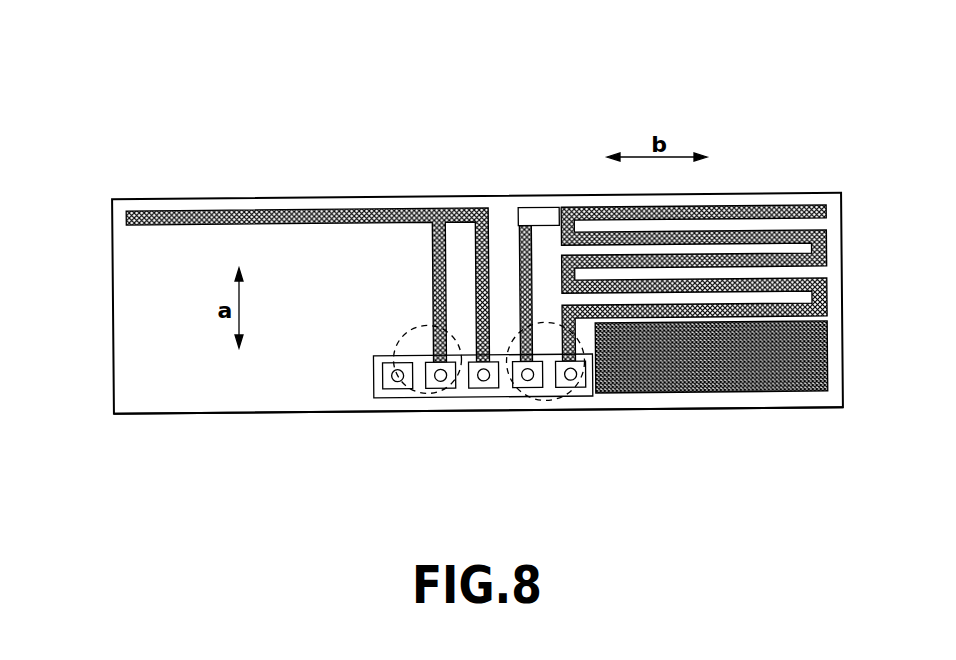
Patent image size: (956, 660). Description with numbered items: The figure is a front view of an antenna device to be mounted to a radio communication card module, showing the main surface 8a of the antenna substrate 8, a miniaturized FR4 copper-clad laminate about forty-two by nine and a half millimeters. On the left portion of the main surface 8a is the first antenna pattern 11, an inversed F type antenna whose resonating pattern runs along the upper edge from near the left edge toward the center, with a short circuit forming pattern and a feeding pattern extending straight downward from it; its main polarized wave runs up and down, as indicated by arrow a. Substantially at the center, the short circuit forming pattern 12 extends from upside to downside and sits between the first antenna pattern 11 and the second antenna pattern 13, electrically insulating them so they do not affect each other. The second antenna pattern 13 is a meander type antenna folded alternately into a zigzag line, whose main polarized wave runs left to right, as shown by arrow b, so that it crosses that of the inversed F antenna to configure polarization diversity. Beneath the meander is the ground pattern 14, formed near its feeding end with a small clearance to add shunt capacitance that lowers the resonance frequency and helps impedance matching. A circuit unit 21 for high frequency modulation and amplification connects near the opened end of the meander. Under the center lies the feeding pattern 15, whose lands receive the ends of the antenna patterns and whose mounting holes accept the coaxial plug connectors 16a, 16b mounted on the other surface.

The antenna substrate 8 is at (257, 138).
The main surface 8a is at (207, 403).
The first antenna pattern 11 is at (460, 208).
The circuit unit 21 is at (538, 215).
The short circuit forming pattern 12 is at (520, 298).
The second antenna pattern 13 is at (775, 206).
The ground pattern 14 is at (710, 390).
The feeding pattern 15 is at (374, 381).
The coaxial plug connector 16a is at (421, 393).
The coaxial plug connector 16b is at (550, 398).